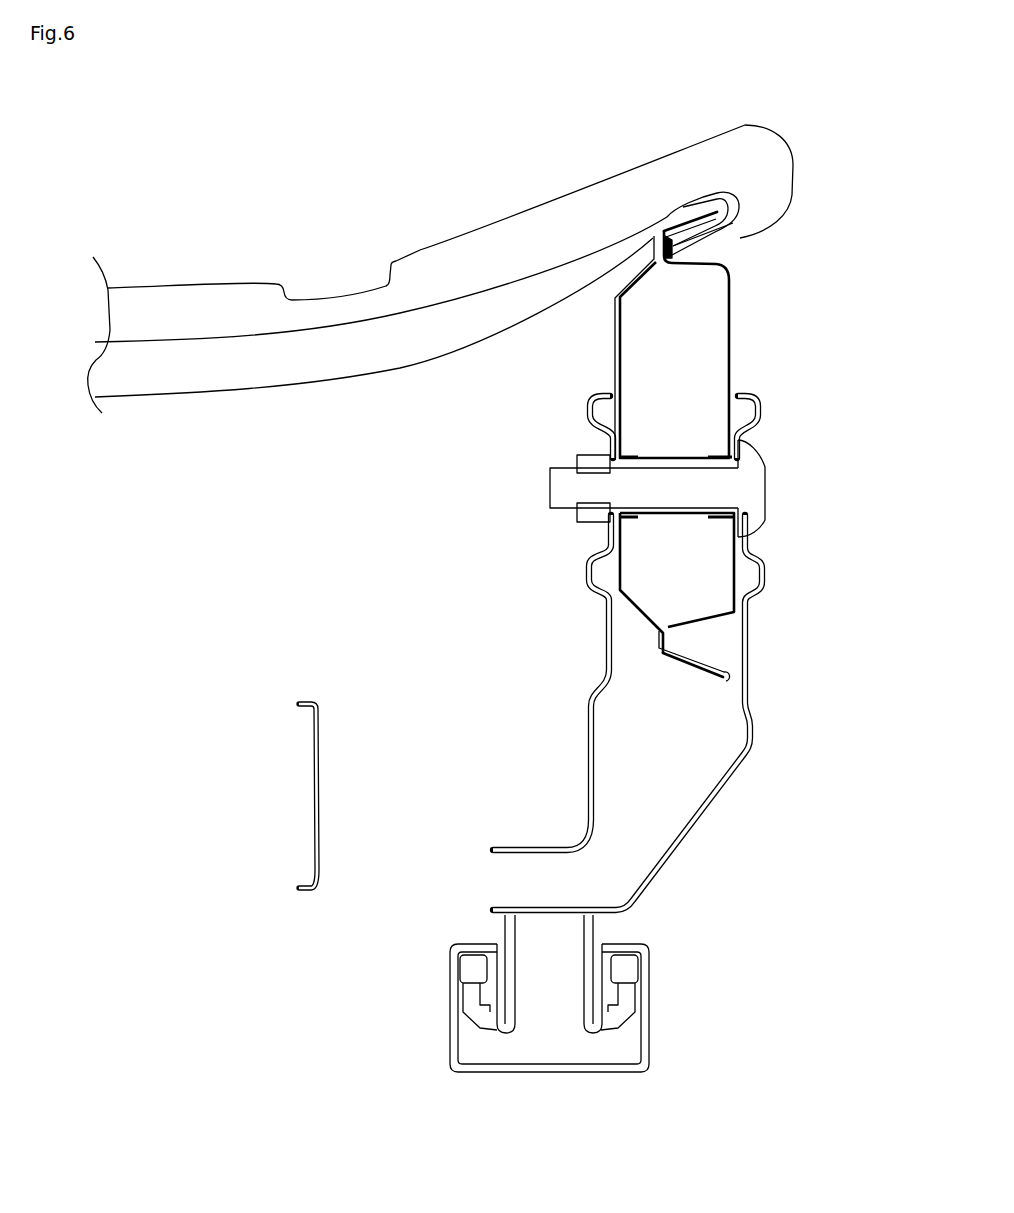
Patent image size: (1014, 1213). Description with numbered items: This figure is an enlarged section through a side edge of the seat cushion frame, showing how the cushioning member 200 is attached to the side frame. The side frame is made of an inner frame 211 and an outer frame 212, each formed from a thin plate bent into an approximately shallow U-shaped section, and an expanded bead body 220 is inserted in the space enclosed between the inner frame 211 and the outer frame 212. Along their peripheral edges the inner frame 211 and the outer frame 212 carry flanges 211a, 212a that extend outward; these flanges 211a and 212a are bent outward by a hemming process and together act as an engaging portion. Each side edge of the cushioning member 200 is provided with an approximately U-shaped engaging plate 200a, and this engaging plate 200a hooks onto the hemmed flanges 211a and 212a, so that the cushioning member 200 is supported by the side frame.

The cushioning member 200 is at (500, 224).
The engaging plate 200a is at (736, 198).
The inner frame 211 is at (613, 354).
The flange 211a is at (690, 215).
The outer frame 212 is at (733, 327).
The flange 212a is at (720, 236).
The expanded bead body 220 is at (683, 358).